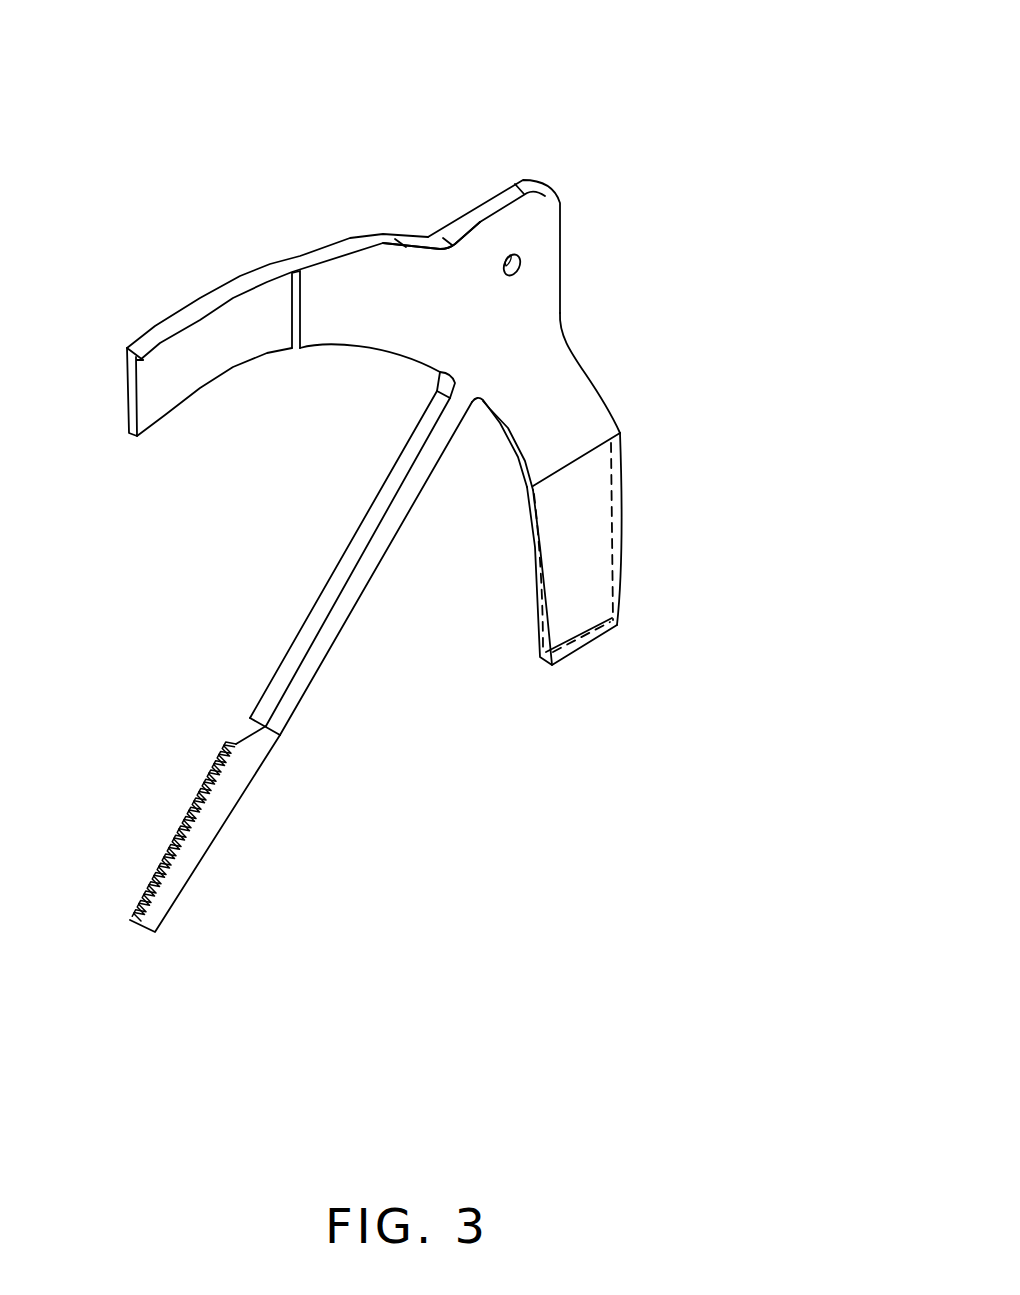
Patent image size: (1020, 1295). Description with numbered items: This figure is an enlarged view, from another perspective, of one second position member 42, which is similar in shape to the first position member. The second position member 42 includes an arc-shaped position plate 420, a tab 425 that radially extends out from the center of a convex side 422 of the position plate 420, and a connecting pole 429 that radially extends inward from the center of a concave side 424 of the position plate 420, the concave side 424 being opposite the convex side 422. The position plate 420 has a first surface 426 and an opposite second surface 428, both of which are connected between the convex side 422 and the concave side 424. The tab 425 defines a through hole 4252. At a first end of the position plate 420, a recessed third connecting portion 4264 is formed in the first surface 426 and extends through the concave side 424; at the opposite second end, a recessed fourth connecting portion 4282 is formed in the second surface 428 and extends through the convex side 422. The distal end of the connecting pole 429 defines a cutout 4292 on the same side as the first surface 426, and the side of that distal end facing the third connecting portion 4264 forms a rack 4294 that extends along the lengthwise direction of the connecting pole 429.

The second position member 42 is at (240, 65).
The position plate 420 is at (577, 385).
The convex side 422 is at (360, 240).
The concave side 424 is at (515, 452).
The tab 425 is at (543, 222).
The first surface 426 is at (417, 280).
The second surface 428 is at (537, 618).
The connecting pole 429 is at (347, 565).
The through hole 4252 is at (512, 267).
The third connecting portion 4264 is at (192, 363).
The fourth connecting portion 4282 is at (595, 555).
The cutout 4292 is at (252, 722).
The rack 4294 is at (215, 785).